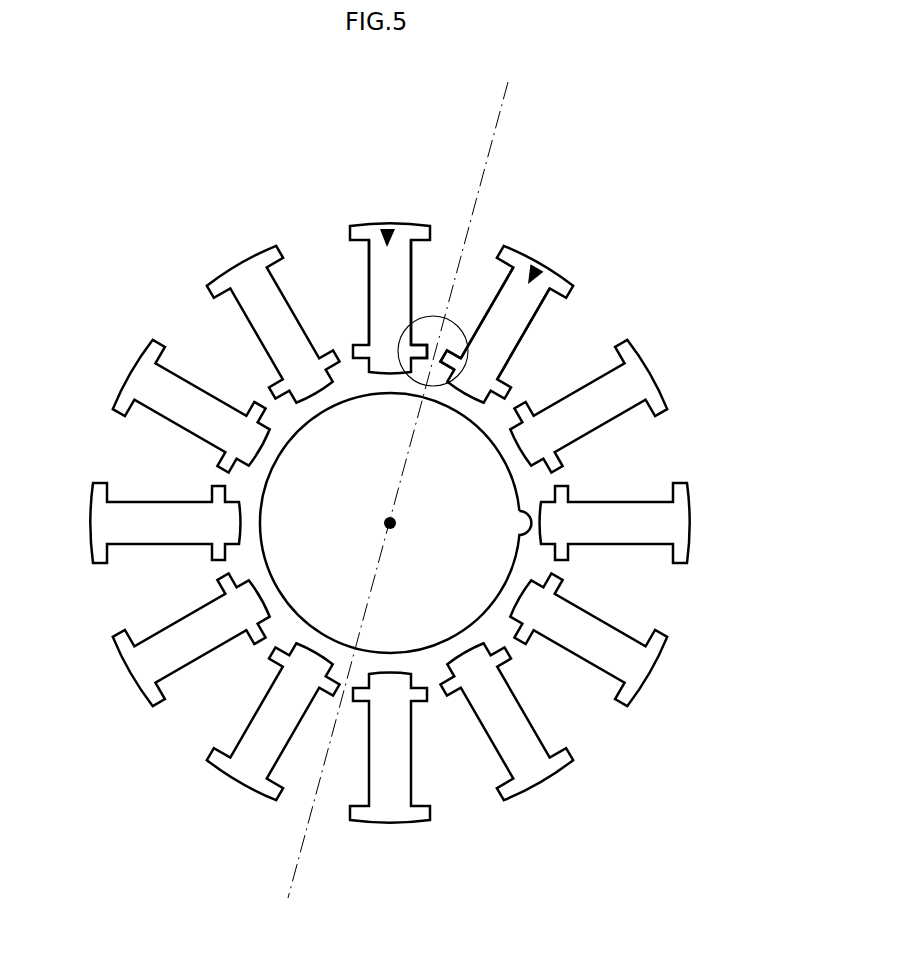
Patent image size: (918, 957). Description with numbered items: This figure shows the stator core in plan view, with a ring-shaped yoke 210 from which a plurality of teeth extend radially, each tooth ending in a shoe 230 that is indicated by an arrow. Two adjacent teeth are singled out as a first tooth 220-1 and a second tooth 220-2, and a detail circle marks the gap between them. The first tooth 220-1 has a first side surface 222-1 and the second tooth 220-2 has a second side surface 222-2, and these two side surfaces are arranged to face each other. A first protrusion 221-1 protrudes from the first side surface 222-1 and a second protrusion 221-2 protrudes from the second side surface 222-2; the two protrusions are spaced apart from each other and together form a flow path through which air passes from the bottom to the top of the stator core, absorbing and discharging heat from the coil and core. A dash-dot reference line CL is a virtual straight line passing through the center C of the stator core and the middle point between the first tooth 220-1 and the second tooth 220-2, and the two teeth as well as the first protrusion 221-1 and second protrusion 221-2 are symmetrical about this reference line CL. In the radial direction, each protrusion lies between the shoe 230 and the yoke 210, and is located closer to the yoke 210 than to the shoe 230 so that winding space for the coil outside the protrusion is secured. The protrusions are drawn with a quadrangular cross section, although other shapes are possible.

The yoke 210 is at (417, 397).
The first tooth 220-1 is at (390, 227).
The first protrusion 221-1 is at (417, 340).
The first side surface 222-1 is at (412, 288).
The second tooth 220-2 is at (543, 262).
The second protrusion 221-2 is at (455, 351).
The second side surface 222-2 is at (491, 305).
The shoe 230 is at (393, 228).
The center C is at (390, 523).
The reference line CL is at (505, 95).